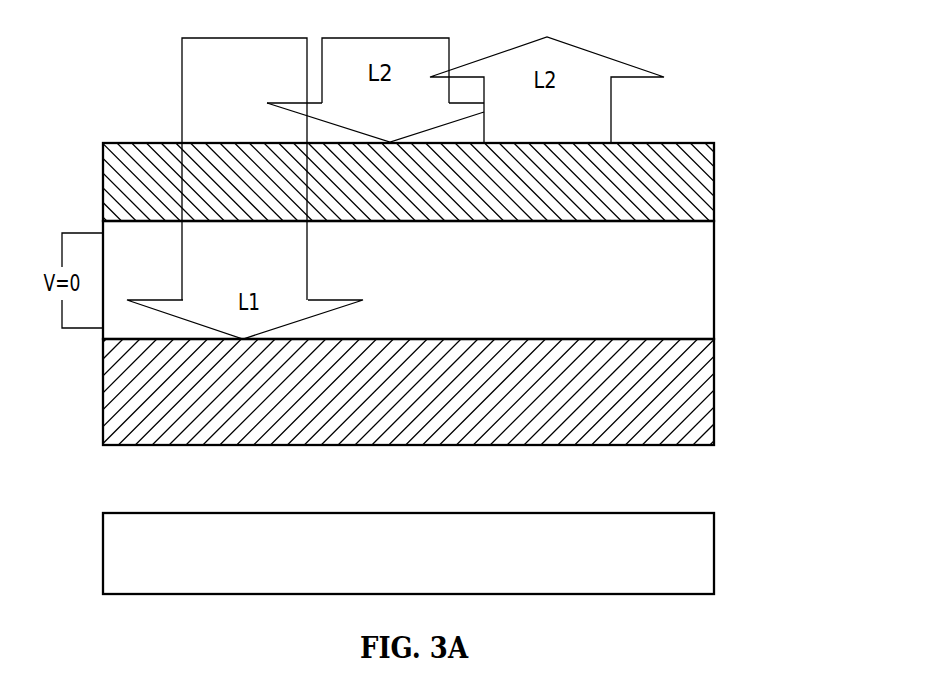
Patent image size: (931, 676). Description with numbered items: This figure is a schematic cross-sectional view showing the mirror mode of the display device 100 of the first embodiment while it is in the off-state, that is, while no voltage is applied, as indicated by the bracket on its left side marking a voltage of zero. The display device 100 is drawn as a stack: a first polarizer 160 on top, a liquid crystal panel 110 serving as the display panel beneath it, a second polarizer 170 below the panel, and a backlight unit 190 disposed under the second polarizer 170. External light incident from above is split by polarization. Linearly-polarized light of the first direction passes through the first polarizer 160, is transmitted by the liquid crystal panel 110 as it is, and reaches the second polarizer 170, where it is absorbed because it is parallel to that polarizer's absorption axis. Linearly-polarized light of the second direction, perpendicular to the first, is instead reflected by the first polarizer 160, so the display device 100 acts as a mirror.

The display device 100 is at (408, 227).
The first polarizer 160 is at (693, 188).
The liquid crystal panel 110 is at (693, 275).
The second polarizer 170 is at (693, 388).
The backlight unit 190 is at (693, 557).